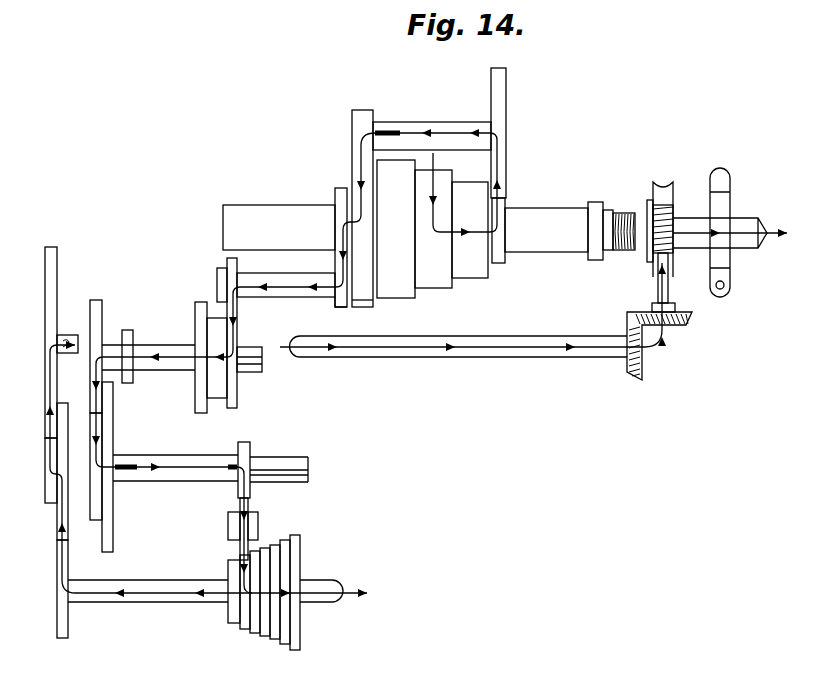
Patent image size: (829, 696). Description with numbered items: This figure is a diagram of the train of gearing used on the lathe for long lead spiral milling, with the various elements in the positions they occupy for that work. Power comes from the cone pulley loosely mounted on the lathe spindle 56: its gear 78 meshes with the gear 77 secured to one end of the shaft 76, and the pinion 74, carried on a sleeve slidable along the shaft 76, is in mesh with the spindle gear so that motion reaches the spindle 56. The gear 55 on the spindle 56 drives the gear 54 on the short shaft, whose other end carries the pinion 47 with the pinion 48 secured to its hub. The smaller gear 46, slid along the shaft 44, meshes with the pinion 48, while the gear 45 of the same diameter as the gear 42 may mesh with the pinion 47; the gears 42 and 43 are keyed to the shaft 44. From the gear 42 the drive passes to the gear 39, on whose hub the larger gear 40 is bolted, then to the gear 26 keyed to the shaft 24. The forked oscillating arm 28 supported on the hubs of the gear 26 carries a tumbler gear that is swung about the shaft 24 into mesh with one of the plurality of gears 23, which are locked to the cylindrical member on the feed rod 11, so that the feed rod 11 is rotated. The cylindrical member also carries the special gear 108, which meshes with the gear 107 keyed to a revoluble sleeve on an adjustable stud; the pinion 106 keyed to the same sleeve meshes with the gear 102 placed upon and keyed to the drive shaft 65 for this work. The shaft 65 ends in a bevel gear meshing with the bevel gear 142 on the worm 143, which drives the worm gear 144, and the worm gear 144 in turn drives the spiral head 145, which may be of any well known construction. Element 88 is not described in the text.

The feed rod 11 is at (326, 580).
The gears 23 is at (265, 641).
The shaft 24 is at (164, 456).
The gear 26 is at (253, 445).
The forked oscillating arm 28 is at (256, 503).
The gear 39 is at (437, 289).
The larger gear 40 is at (113, 508).
The gear 42 is at (105, 307).
The gear 43 is at (148, 344).
The shaft 44 is at (246, 374).
The gear 45 is at (194, 316).
The gear 46 is at (238, 326).
The pinion 47 is at (216, 270).
The pinion 48 is at (240, 273).
The gear 54 is at (334, 300).
The gear 55 is at (341, 188).
The lathe spindle 56 is at (262, 205).
The drive shaft 65 is at (69, 335).
The pinion 74 is at (372, 108).
The shaft 76 is at (437, 122).
The gear 77 is at (508, 94).
The gear 78 is at (500, 265).
The gear 88 is at (366, 305).
The gear 102 is at (60, 267).
The pinion 106 is at (44, 458).
The gear 107 is at (56, 522).
The gear 108 is at (69, 626).
The bevel gear 142 is at (727, 340).
The worm 143 is at (652, 222).
The worm gear 144 is at (672, 165).
The spiral head 145 is at (730, 232).